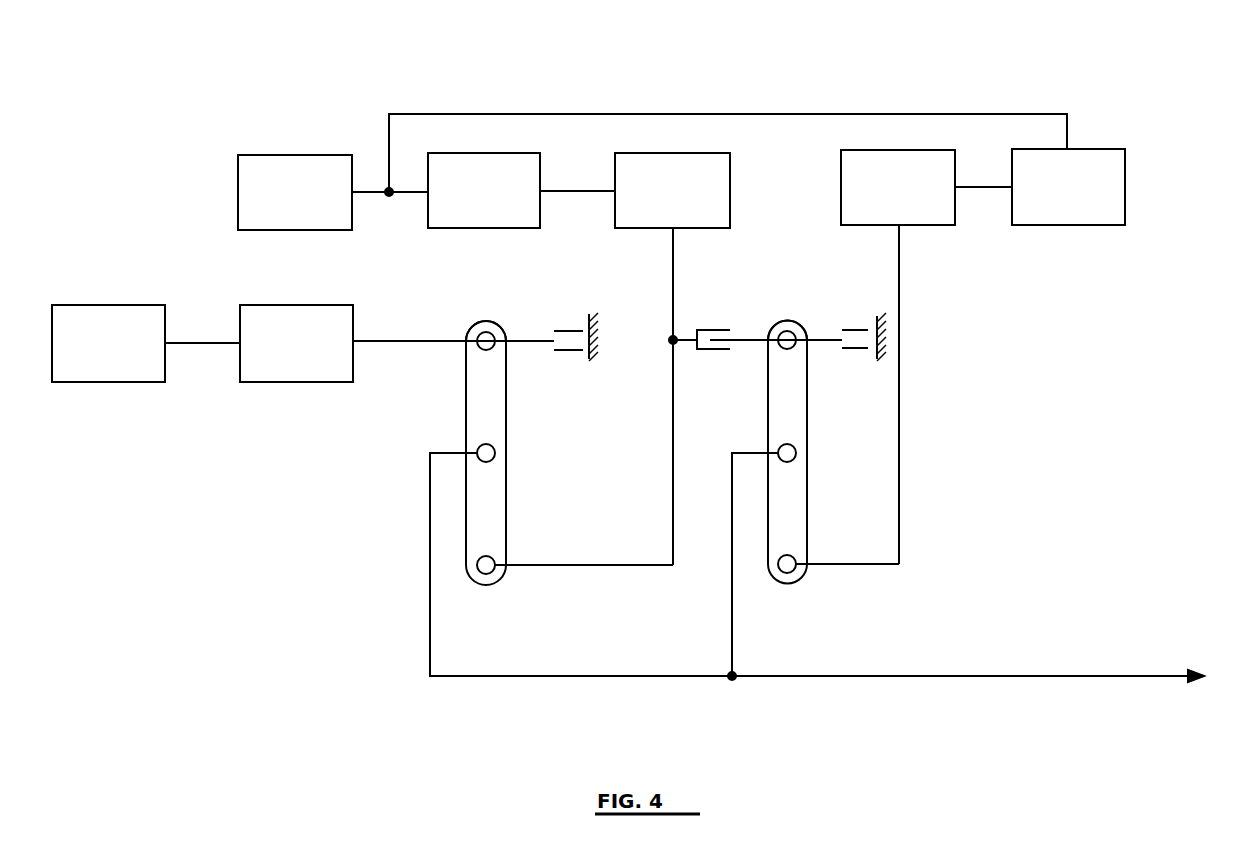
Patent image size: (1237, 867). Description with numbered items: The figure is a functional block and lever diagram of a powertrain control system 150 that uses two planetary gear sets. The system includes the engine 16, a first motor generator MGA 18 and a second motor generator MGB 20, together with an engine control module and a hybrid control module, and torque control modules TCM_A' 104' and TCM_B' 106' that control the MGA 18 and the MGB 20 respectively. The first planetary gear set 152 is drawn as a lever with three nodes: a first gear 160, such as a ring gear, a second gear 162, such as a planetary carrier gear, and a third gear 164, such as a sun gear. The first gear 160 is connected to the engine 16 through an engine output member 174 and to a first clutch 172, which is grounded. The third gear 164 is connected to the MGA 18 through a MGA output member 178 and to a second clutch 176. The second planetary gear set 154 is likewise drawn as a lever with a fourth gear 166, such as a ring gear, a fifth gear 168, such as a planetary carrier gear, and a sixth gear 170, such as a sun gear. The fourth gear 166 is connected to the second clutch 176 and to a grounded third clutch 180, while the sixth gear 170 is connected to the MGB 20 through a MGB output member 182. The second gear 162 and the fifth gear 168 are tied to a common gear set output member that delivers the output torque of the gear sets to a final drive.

The powertrain control system 150 is at (210, 57).
The engine 16 is at (298, 305).
The torque control module TCM_A' 104' is at (485, 215).
The MGA 18 is at (730, 191).
The MGB 20 is at (841, 186).
The torque control module TCM_B' 106' is at (1111, 176).
The engine output member 174 is at (390, 341).
The first planetary gear set 152 is at (472, 326).
The first gear 160 is at (480, 347).
The second gear 162 is at (495, 447).
The third gear 164 is at (495, 558).
The first clutch 172 is at (573, 331).
The MGA output member 178 is at (673, 258).
The second clutch 176 is at (713, 330).
The second planetary gear set 154 is at (800, 326).
The fourth gear 166 is at (783, 347).
The fifth gear 168 is at (796, 456).
The sixth gear 170 is at (796, 567).
The third clutch 180 is at (852, 349).
The MGB output member 182 is at (900, 424).